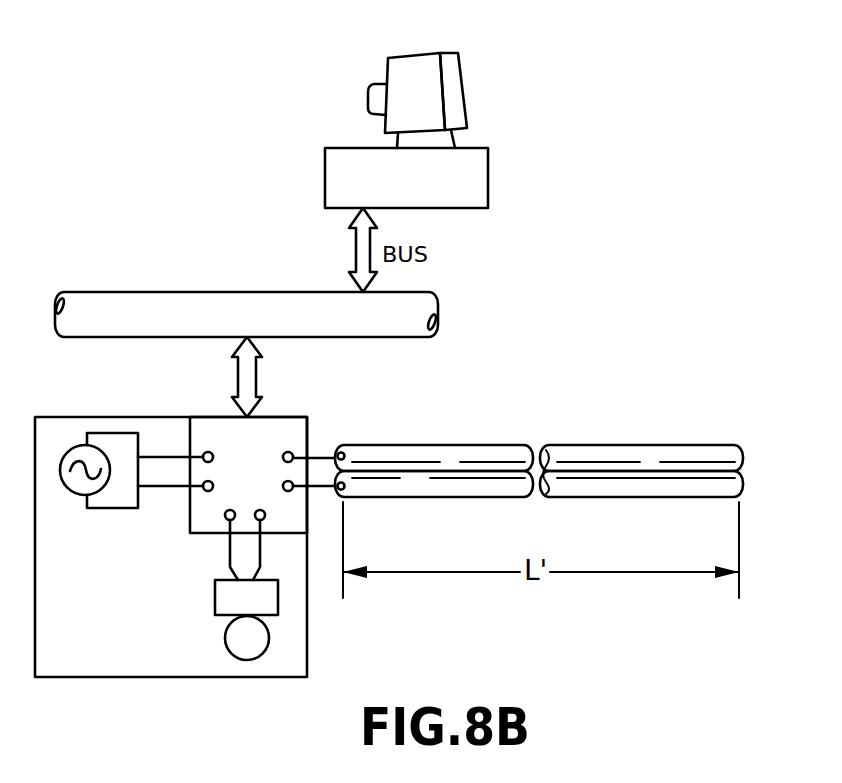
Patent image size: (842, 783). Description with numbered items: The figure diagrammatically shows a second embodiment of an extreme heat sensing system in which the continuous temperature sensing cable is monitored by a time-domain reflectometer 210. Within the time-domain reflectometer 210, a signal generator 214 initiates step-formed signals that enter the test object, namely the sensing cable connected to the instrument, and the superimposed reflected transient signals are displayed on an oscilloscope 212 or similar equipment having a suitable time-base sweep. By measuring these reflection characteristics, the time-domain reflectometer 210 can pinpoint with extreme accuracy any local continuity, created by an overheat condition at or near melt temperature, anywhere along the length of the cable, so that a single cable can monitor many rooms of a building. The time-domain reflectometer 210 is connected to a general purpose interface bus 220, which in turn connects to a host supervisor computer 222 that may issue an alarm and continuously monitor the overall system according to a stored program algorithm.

The time-domain reflectometer 210 is at (36, 648).
The oscilloscope 212 is at (262, 635).
The signal generator 214 is at (123, 417).
The general purpose interface bus 220 is at (137, 292).
The host supervisor computer 222 is at (362, 130).